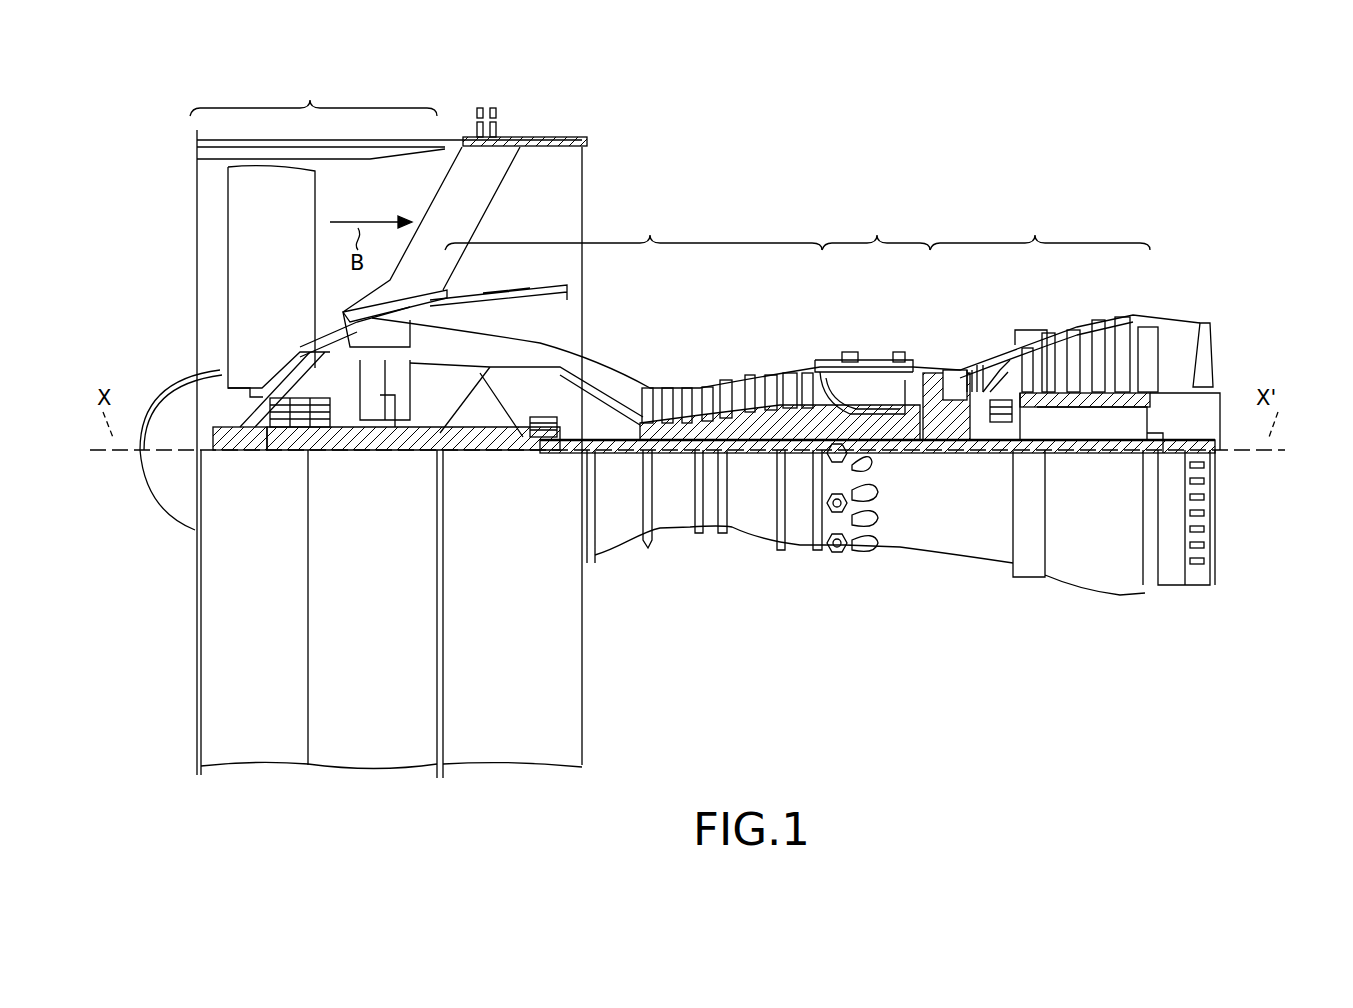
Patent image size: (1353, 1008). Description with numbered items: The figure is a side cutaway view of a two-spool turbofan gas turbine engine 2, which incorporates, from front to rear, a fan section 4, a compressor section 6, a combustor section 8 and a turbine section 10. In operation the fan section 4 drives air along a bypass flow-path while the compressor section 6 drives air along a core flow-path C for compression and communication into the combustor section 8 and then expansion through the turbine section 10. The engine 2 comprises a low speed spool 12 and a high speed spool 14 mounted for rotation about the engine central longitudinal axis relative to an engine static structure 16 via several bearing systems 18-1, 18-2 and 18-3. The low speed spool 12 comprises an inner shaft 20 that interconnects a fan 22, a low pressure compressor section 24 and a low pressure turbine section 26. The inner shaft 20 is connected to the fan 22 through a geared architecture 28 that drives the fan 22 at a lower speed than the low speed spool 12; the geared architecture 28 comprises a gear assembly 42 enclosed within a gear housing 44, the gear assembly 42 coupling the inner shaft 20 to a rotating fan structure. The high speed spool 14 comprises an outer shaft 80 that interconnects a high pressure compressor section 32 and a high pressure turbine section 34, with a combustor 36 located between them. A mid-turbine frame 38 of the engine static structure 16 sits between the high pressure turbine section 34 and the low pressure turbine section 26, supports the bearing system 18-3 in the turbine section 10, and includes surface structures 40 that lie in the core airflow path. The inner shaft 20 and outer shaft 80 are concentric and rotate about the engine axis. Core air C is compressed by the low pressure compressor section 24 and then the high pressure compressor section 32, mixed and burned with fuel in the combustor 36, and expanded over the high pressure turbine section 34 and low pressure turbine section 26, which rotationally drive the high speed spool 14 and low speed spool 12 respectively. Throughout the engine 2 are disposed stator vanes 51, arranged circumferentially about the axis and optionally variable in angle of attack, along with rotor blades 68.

The gas turbine engine 2 is at (925, 178).
The fan section 4 is at (313, 94).
The compressor section 6 is at (633, 228).
The combustor section 8 is at (876, 228).
The turbine section 10 is at (1040, 227).
The low speed spool 12 is at (754, 470).
The high speed spool 14 is at (795, 420).
The engine static structure 16 is at (365, 742).
The bearing system 18-1 is at (283, 440).
The bearing system 18-2 is at (545, 440).
The bearing system 18-3 is at (997, 447).
The inner shaft 20 is at (608, 453).
The fan 22 is at (282, 264).
The low pressure compressor section 24 is at (520, 340).
The low pressure turbine section 26 is at (1080, 332).
The geared architecture 28 is at (398, 487).
The high pressure compressor section 32 is at (740, 420).
The high pressure turbine section 34 is at (940, 373).
The combustor 36 is at (878, 385).
The mid-turbine frame 38 is at (980, 373).
The surface structures 40 is at (1000, 370).
The gear assembly 42 is at (412, 433).
The gear housing 44 is at (412, 412).
The stator vane 51 is at (680, 385).
The rotor blade 68 is at (967, 373).
The outer shaft 80 is at (872, 447).
The core flow-path C is at (328, 322).